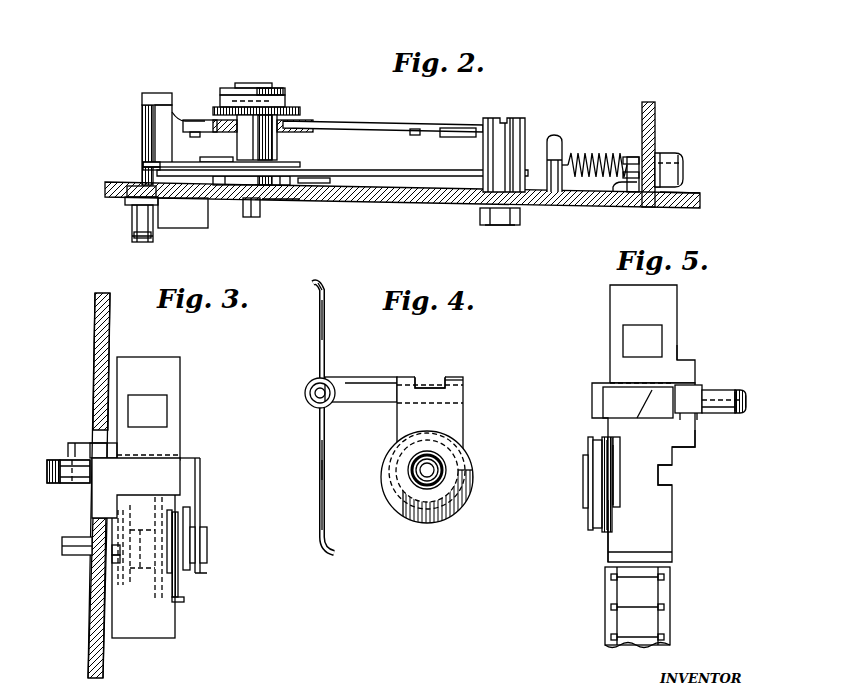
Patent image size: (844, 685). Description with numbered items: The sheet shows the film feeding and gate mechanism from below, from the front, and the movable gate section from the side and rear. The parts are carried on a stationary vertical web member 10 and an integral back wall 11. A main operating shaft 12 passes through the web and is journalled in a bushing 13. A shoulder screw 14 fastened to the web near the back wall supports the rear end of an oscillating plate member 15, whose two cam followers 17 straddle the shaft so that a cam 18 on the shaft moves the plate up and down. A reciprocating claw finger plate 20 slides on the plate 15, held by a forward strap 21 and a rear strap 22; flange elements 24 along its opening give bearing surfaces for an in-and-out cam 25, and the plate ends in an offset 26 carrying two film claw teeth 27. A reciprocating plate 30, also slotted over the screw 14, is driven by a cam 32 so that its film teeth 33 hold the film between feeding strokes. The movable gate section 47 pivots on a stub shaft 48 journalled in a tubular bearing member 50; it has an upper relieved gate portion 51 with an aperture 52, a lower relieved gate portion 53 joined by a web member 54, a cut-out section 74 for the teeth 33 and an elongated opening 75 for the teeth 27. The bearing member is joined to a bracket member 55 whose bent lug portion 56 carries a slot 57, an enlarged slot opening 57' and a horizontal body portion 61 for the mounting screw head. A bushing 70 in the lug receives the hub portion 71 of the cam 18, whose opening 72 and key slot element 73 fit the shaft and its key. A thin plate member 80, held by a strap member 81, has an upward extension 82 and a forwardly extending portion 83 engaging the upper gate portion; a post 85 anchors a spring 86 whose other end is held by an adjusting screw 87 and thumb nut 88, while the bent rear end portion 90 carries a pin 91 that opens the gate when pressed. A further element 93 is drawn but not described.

In FIG. 2, the vertical web member 10 is at (572, 196).
In FIG. 2, the stationary back wall 11 is at (656, 113).
In FIG. 2, the main operating shaft 12 is at (258, 212).
In FIG. 3, the main operating shaft 12 is at (74, 556).
In FIG. 2, the bushing 13 is at (285, 198).
In FIG. 2, the shoulder screw 14 is at (508, 118).
In FIG. 2, the oscillating plate member 15 is at (385, 122).
In FIG. 3, the cam followers 17 is at (180, 604).
In FIG. 2, the cam 18 is at (291, 108).
In FIG. 3, the cam 18 is at (182, 592).
In FIG. 5, the cam 18 is at (605, 530).
In FIG. 2, the reciprocating claw finger plate 20 is at (420, 128).
In FIG. 2, the strap 21 is at (183, 125).
In FIG. 2, the strap 22 is at (455, 128).
In FIG. 2, the flange element 24 is at (233, 128).
In FIG. 2, the in-and-out cam 25 is at (298, 130).
In FIG. 2, the offset 26 is at (176, 117).
In FIG. 2, the film claw teeth 27 is at (153, 95).
In FIG. 3, the film claw teeth 27 is at (200, 562).
In FIG. 2, the reciprocating plate 30 is at (397, 176).
In FIG. 2, the cam 32 is at (292, 162).
In FIG. 2, the film teeth 33 is at (143, 165).
In FIG. 3, the film teeth 33 is at (120, 558).
In FIG. 4, the movable gate section 47 is at (326, 493).
In FIG. 5, the movable gate section 47 is at (680, 337).
In FIG. 2, the stub shaft 48 is at (140, 241).
In FIG. 3, the stub shaft 48 is at (47, 472).
In FIG. 4, the stub shaft 48 is at (310, 384).
In FIG. 5, the stub shaft 48 is at (722, 416).
In FIG. 2, the tubular bearing member 50 is at (152, 236).
In FIG. 3, the tubular bearing member 50 is at (55, 484).
In FIG. 4, the tubular bearing member 50 is at (329, 400).
In FIG. 5, the tubular bearing member 50 is at (720, 388).
In FIG. 3, the upper relieved gate portion 51 is at (162, 370).
In FIG. 4, the upper relieved gate portion 51 is at (326, 290).
In FIG. 5, the upper relieved gate portion 51 is at (632, 298).
In FIG. 3, the aperture 52 is at (163, 405).
In FIG. 4, the aperture 52 is at (319, 332).
In FIG. 5, the aperture 52 is at (630, 350).
In FIG. 3, the lower relieved gate portion 53 is at (153, 628).
In FIG. 4, the lower relieved gate portion 53 is at (327, 466).
In FIG. 5, the lower relieved gate portion 53 is at (665, 549).
In FIG. 4, the web member 54 is at (322, 391).
In FIG. 5, the web member 54 is at (684, 434).
In FIG. 3, the bracket member 55 is at (196, 458).
In FIG. 4, the bracket member 55 is at (386, 378).
In FIG. 5, the bracket member 55 is at (606, 390).
In FIG. 3, the lug portion 56 is at (200, 525).
In FIG. 4, the lug portion 56 is at (455, 425).
In FIG. 5, the lug portion 56 is at (592, 432).
In FIG. 4, the slot 57 is at (443, 365).
In FIG. 4, the enlarged slot opening 57' is at (481, 379).
In FIG. 5, the horizontal body portion 61 is at (640, 418).
In FIG. 4, the bushing 70 is at (455, 490).
In FIG. 5, the bushing 70 is at (597, 510).
In FIG. 4, the hub portion 71 is at (431, 476).
In FIG. 4, the opening 72 is at (421, 478).
In FIG. 4, the key slot element 73 is at (447, 468).
In FIG. 2, the cut-out section 74 is at (143, 168).
In FIG. 3, the cut-out section 74 is at (116, 552).
In FIG. 5, the cut-out section 74 is at (670, 477).
In FIG. 2, the elongated opening 75 is at (143, 112).
In FIG. 3, the elongated opening 75 is at (172, 541).
In FIG. 4, the elongated opening 75 is at (322, 470).
In FIG. 5, the elongated opening 75 is at (618, 507).
In FIG. 2, the thin plate member 80 is at (133, 203).
In FIG. 3, the thin plate member 80 is at (72, 484).
In FIG. 2, the strap member 81 is at (333, 185).
In FIG. 3, the upward extension 82 is at (68, 448).
In FIG. 2, the forwardly extending portion 83 is at (198, 222).
In FIG. 3, the forwardly extending portion 83 is at (110, 443).
In FIG. 2, the post 85 is at (562, 145).
In FIG. 2, the spring 86 is at (605, 156).
In FIG. 2, the adjusting screw 87 is at (660, 157).
In FIG. 2, the thumb nut 88 is at (683, 160).
In FIG. 2, the rear end portion 90 is at (624, 190).
In FIG. 2, the pin 91 is at (680, 191).
In FIG. 2, the bracket 93 is at (637, 157).